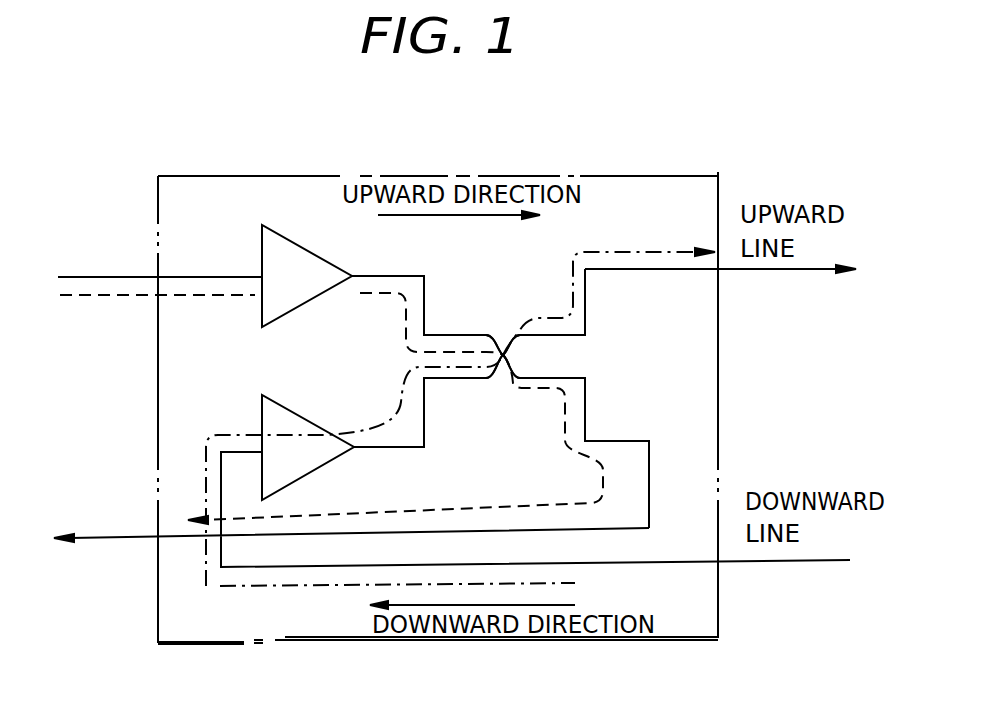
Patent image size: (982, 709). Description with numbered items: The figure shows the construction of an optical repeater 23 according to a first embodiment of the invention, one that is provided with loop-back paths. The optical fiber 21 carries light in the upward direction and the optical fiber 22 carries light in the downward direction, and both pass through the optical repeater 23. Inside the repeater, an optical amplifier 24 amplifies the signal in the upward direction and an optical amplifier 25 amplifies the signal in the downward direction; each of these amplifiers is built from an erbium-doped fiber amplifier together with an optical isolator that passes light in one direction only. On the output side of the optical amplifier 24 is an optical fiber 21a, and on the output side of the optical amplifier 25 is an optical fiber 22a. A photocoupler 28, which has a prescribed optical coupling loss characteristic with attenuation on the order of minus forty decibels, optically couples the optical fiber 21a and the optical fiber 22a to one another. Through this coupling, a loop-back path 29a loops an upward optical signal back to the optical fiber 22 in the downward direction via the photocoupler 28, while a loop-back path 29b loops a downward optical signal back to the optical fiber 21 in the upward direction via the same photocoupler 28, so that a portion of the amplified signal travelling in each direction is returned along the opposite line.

The optical fiber in the upward direction 21 is at (100, 280).
The optical fiber in the downward direction 22 is at (97, 532).
The optical repeater 23 is at (648, 171).
The optical amplifier in the upward direction 24 is at (333, 272).
The optical amplifier in the downward direction 25 is at (296, 420).
The optical fiber on the output side of the optical amplifier in the upward directio 21a is at (427, 283).
The optical fiber on the output side of the optical amplifier in the downward direct 22a is at (400, 448).
The photocoupler 28 is at (503, 375).
The loop-back path 29a is at (587, 418).
The loop-back path 29b is at (408, 374).